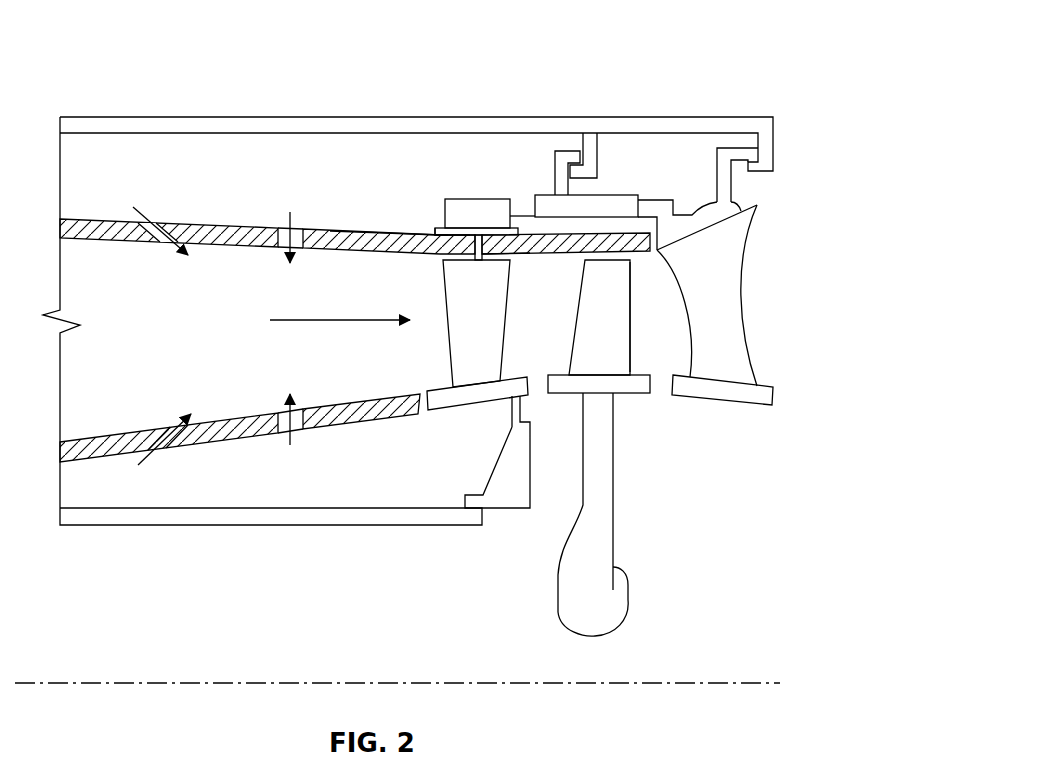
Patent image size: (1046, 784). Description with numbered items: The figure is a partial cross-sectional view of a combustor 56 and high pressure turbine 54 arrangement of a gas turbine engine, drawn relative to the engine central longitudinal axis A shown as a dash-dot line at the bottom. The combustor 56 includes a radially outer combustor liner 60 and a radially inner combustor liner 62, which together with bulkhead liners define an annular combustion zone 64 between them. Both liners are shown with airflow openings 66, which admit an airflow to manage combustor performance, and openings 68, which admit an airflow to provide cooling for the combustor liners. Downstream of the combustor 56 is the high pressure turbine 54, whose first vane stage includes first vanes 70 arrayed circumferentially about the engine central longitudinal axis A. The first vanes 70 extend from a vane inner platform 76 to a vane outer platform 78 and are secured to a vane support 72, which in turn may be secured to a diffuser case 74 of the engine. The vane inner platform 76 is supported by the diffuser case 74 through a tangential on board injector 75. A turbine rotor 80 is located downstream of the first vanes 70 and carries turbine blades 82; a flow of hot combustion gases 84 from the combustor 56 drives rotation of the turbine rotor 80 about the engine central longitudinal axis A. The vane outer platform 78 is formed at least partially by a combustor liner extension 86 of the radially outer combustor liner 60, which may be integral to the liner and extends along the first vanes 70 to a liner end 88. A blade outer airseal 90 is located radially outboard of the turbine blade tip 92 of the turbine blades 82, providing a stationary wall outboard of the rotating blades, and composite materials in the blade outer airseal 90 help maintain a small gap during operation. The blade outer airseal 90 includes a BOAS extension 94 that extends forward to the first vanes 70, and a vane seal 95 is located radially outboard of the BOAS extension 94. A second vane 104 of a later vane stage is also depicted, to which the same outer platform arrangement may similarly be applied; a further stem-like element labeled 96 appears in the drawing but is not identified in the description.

The high pressure turbine 54 is at (682, 58).
The combustor 56 is at (140, 192).
The radially outer combustor liner 60 is at (200, 226).
The radially inner combustor liner 62 is at (140, 432).
The combustion zone 64 is at (127, 340).
The airflow openings 66 is at (287, 232).
The openings 68 is at (165, 222).
The first vanes 70 is at (465, 331).
The vane support 72 is at (545, 203).
The diffuser case 74 is at (663, 117).
The tangential on board injector 75 is at (482, 488).
The vane inner platform 76 is at (492, 393).
The vane outer platform 78 is at (494, 212).
The turbine rotor 80 is at (605, 497).
The turbine blades 82 is at (585, 331).
The flow of hot combustion gases 84 is at (340, 295).
The combustor liner extension 86 is at (372, 242).
The liner end 88 is at (457, 233).
The blade outer airseal 90 is at (597, 238).
The turbine blade tip 92 is at (612, 262).
The BOAS extension 94 is at (522, 255).
The vane seal 95 is at (442, 233).
The vane stem 96 is at (484, 250).
The second vane 104 is at (727, 270).
The engine central longitudinal axis A is at (725, 683).